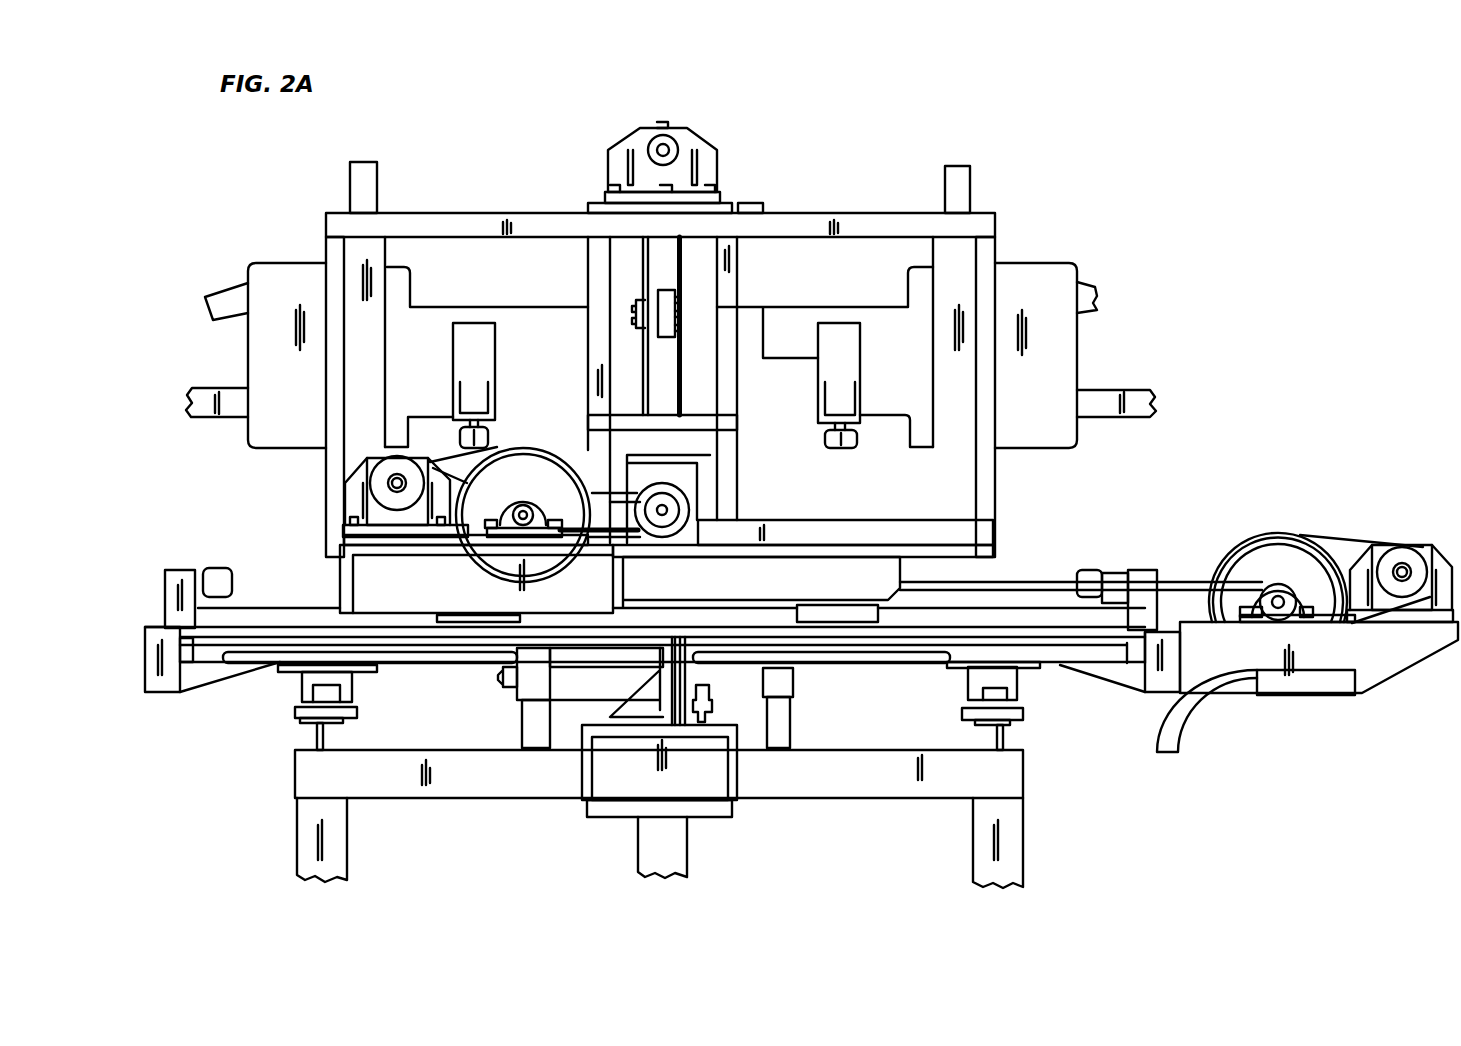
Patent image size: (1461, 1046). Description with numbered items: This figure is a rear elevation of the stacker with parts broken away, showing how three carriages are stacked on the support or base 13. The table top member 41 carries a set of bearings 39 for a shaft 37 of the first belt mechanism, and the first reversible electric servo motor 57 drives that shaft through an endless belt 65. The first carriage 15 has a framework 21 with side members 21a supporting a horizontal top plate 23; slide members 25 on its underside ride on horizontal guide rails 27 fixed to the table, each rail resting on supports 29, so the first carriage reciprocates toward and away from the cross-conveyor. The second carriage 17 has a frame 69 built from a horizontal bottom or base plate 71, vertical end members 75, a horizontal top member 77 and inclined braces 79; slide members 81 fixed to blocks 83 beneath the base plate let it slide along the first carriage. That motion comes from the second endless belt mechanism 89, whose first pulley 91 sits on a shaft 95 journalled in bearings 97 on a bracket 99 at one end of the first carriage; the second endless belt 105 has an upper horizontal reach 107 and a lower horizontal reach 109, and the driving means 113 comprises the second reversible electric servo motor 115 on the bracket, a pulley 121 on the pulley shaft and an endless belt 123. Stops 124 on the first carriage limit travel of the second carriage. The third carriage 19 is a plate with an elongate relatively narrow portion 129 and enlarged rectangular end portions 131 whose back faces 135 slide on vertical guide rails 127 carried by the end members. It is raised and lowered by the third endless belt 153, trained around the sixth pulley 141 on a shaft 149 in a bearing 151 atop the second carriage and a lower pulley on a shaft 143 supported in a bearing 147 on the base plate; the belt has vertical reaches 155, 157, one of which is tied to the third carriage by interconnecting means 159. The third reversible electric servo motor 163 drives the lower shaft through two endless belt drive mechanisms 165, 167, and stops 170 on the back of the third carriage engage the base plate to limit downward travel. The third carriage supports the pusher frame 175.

The support or base 13 is at (295, 835).
The first carriage 15 is at (148, 700).
The second carriage 17 is at (995, 213).
The third carriage 19 is at (1078, 266).
The framework 21 is at (212, 665).
The side members 21a is at (145, 625).
The horizontal top plate 23 is at (438, 620).
The slide members 25 is at (353, 688).
The guide rails 27 is at (357, 714).
The supports 29 is at (317, 735).
The shaft 37 is at (715, 705).
The bearings 39 is at (659, 762).
The top member 41 is at (610, 740).
The first reversible electric servo motor 57 is at (603, 690).
The endless belt 65 is at (690, 677).
The frame 69 is at (326, 214).
The horizontal bottom or base plate 71 is at (838, 543).
The vertical end members 75 is at (373, 395).
The horizontal top member 77 is at (795, 213).
The inclined braces 79 is at (335, 404).
The slide members 81 is at (818, 622).
The blocks 83 is at (861, 590).
The second endless belt mechanism 89 is at (978, 573).
The first pulley 91 is at (1280, 585).
The shaft 95 is at (1298, 612).
The bearings 97 is at (1258, 606).
The bracket 99 is at (1422, 690).
The second endless belt 105 is at (1172, 585).
The upper horizontal reach 107 is at (1003, 583).
The lower horizontal reach 109 is at (1073, 617).
The means for driving the second endless belt 113 is at (1382, 490).
The second reversible electric servo motor 115 is at (1432, 545).
The pulley 121 is at (1257, 567).
The endless belt 123 is at (1336, 538).
The stops 124 is at (215, 568).
The guide rails 127 is at (358, 178).
The elongate relatively narrow portion 129 is at (457, 307).
The enlarged rectangular end portions 131 is at (258, 343).
The back face 135 is at (1087, 293).
The sixth pulley 141 is at (687, 120).
The shaft 143 is at (667, 507).
The bearing 147 is at (687, 530).
The shaft 149 is at (652, 148).
The bearing 151 is at (705, 135).
The third endless belt 153 is at (636, 318).
The vertical reach 155 is at (645, 385).
The vertical reach 157 is at (682, 393).
The interconnecting means 159 is at (658, 292).
The third reversible electric servo motor 163 is at (365, 492).
The endless belt drive mechanism 165 is at (536, 588).
The endless belt drive mechanism 167 is at (630, 545).
The stops 170 is at (491, 440).
The frame 175 is at (227, 300).